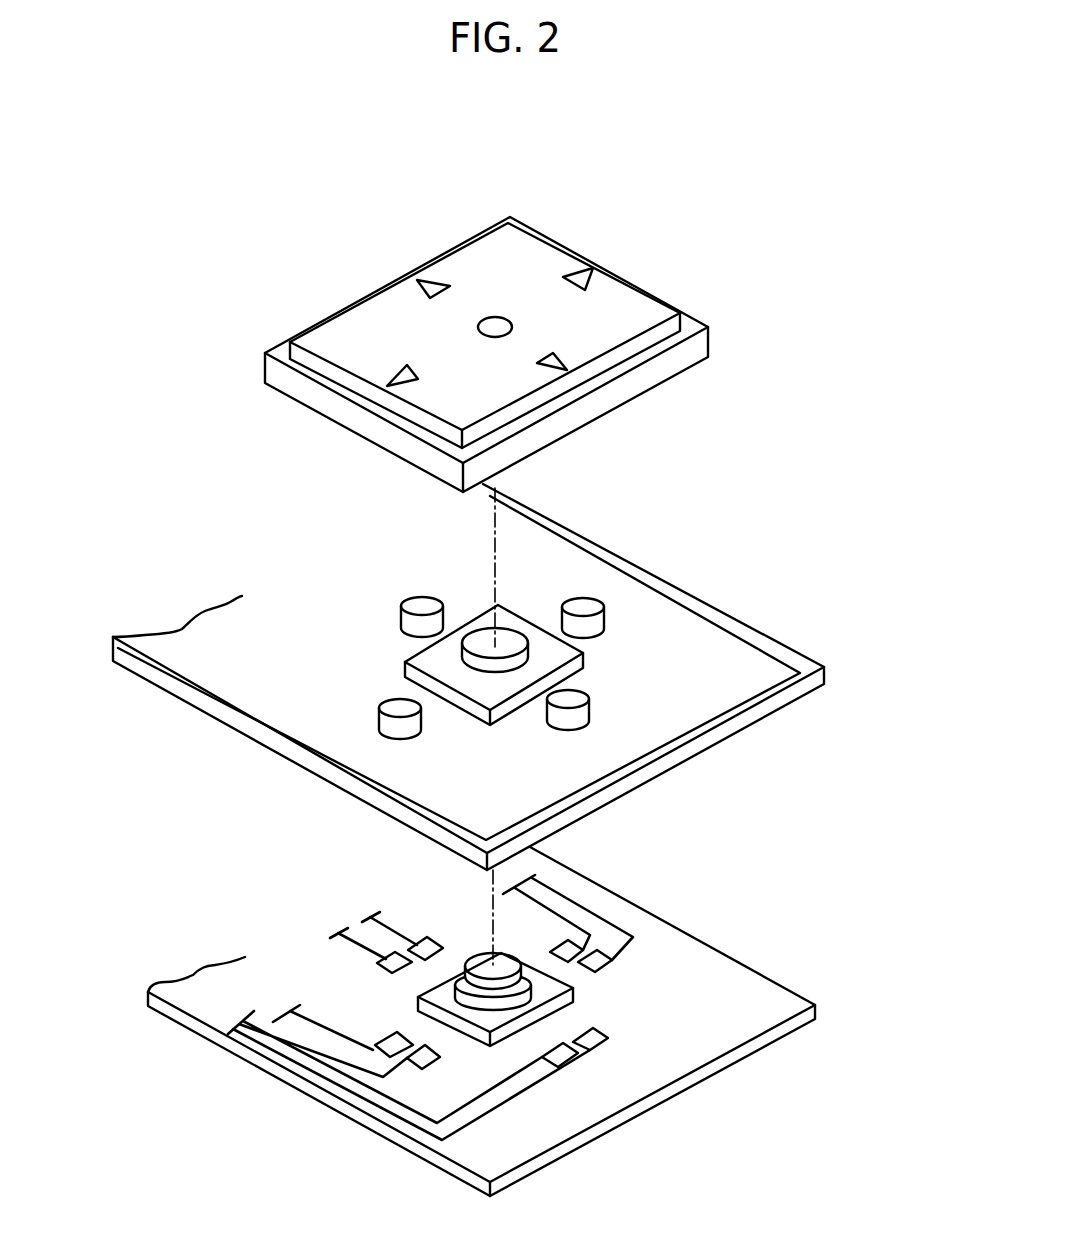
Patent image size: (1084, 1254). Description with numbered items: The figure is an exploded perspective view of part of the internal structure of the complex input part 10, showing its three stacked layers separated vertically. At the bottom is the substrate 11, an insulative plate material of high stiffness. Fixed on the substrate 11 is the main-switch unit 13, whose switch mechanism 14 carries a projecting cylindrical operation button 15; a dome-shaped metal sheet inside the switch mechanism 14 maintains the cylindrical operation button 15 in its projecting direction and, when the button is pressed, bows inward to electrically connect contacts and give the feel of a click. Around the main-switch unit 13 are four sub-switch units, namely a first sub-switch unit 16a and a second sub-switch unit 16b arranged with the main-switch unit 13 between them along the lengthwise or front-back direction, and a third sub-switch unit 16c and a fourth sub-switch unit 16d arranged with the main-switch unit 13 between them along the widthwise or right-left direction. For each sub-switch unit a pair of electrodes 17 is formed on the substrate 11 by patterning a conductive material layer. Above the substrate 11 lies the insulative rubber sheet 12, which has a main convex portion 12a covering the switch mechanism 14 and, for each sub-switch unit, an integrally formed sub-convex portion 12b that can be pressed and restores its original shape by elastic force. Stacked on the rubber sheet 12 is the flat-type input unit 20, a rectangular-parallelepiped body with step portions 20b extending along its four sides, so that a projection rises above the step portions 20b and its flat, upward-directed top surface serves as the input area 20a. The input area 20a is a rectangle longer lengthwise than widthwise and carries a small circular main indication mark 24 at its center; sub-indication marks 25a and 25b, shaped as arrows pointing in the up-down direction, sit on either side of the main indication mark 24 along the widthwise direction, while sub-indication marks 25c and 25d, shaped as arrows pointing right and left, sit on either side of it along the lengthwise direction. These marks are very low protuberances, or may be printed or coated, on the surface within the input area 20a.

The complex input part 10 is at (807, 312).
The flat-type input unit 20 is at (715, 345).
The input area 20a is at (508, 248).
The step portions 20b is at (322, 315).
The main indication mark 24 is at (492, 320).
The sub-indication mark 25a is at (433, 280).
The sub-indication mark 25b is at (553, 363).
The sub-indication mark 25c is at (585, 275).
The sub-indication mark 25d is at (402, 380).
The rubber sheet 12 is at (783, 642).
The main convex portion 12a is at (487, 617).
The sub-convex portion 12b is at (410, 627).
The first sub-switch unit 16a is at (400, 597).
The second sub-switch unit 16b is at (590, 735).
The third sub-switch unit 16c is at (603, 597).
The fourth sub-switch unit 16d is at (367, 735).
The substrate 11 is at (778, 990).
The main-switch unit 13 is at (583, 997).
The switch mechanism 14 is at (420, 995).
The cylindrical operation button 15 is at (480, 963).
The electrodes 17 is at (400, 948).